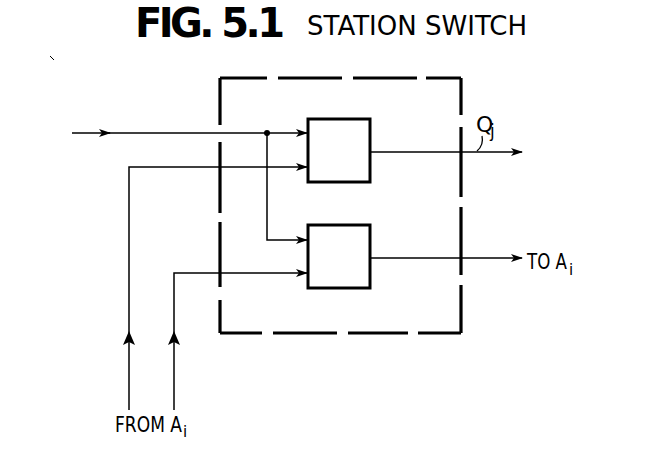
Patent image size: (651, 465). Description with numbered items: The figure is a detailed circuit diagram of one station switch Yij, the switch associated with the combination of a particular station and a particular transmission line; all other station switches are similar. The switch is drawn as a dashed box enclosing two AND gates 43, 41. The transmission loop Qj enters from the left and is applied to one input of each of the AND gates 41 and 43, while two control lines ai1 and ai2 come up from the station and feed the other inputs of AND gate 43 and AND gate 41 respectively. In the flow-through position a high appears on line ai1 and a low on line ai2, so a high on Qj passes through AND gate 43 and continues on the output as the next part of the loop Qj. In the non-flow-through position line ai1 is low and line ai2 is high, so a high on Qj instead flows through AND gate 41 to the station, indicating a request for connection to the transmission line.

The AND gate 43 is at (358, 119).
The AND gate 41 is at (357, 288).
The station switch Yij is at (232, 78).
The transmission loop Qj is at (178, 179).
The line ai1 is at (129, 369).
The line ai2 is at (174, 373).